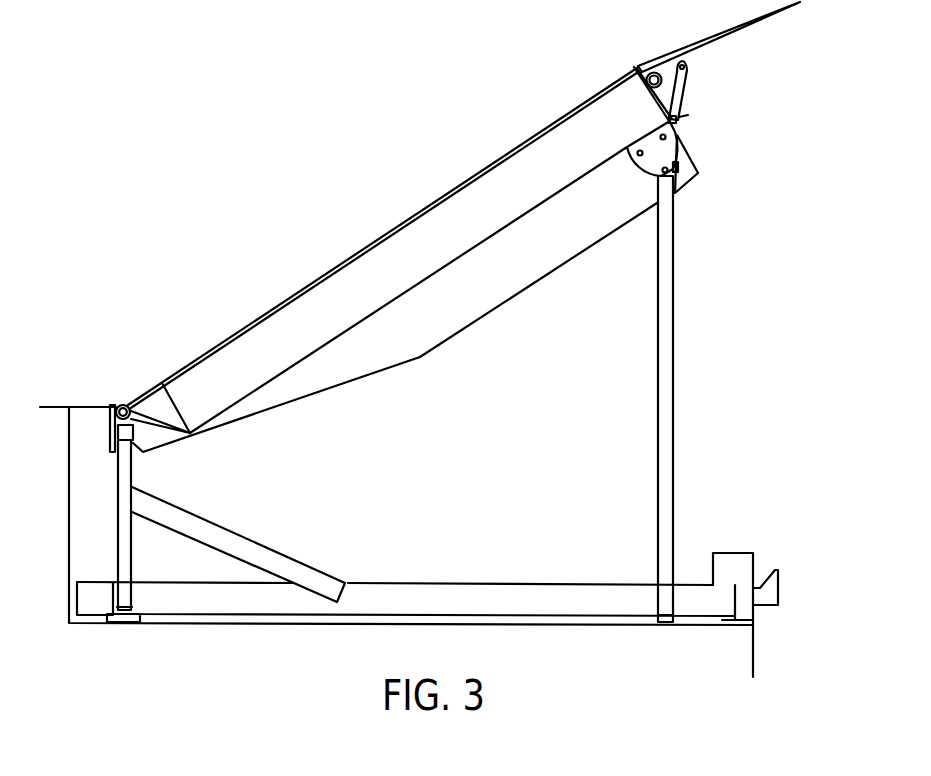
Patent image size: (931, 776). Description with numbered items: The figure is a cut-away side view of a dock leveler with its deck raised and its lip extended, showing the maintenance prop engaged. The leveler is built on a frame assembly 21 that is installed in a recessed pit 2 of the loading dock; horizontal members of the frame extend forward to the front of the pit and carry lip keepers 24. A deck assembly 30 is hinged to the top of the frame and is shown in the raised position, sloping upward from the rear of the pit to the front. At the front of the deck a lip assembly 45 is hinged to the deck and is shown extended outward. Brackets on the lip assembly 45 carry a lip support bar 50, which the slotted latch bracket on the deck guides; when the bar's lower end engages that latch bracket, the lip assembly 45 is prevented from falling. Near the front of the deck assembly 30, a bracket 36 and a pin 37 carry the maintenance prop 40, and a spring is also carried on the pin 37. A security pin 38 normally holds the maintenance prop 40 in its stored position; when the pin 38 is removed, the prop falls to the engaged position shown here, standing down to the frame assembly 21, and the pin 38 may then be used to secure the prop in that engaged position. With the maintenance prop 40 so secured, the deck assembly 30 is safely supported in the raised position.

The recessed pit 2 is at (290, 618).
The frame assembly 21 is at (57, 404).
The lip keepers 24 is at (777, 592).
The deck assembly 30 is at (362, 246).
The bracket 36 is at (678, 150).
The pin 37 is at (675, 128).
The security pin 38 is at (677, 168).
The maintenance prop 40 is at (674, 398).
The lip assembly 45 is at (752, 26).
The lip support bar 50 is at (684, 88).